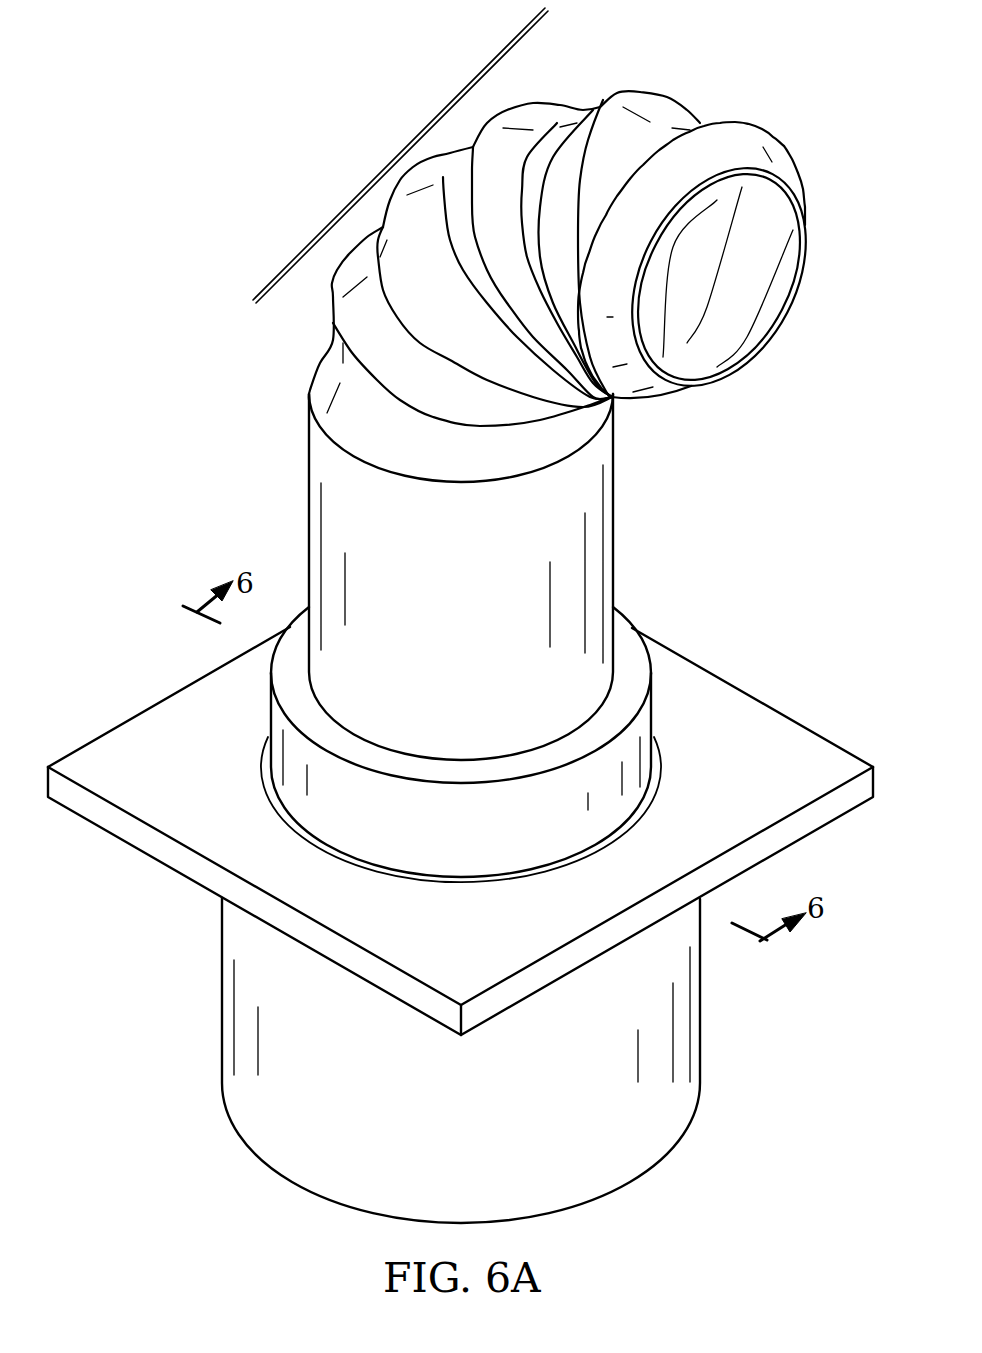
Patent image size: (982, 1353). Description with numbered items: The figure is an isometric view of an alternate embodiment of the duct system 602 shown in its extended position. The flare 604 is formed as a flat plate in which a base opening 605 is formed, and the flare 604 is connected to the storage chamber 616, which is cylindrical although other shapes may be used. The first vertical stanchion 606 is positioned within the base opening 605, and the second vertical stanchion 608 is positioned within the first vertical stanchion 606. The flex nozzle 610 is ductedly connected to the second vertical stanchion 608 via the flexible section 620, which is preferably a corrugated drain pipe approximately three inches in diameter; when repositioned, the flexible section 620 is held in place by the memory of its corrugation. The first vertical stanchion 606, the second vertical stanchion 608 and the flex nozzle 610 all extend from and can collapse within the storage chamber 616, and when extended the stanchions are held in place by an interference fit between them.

The duct system 602 is at (138, 306).
The flare 604 is at (800, 733).
The base opening 605 is at (427, 877).
The first vertical stanchion 606 is at (643, 725).
The second vertical stanchion 608 is at (613, 533).
The flex nozzle 610 is at (687, 393).
The storage chamber 616 is at (700, 1018).
The flexible section 620 is at (403, 158).